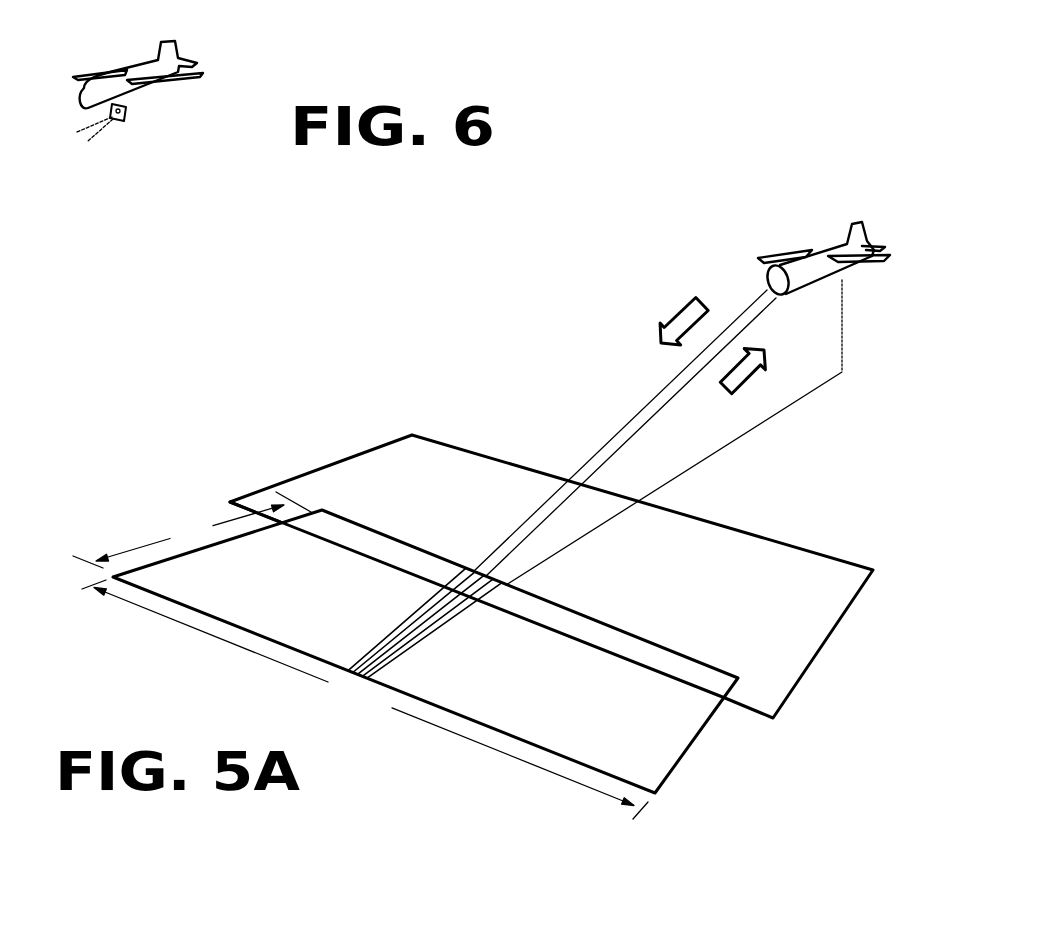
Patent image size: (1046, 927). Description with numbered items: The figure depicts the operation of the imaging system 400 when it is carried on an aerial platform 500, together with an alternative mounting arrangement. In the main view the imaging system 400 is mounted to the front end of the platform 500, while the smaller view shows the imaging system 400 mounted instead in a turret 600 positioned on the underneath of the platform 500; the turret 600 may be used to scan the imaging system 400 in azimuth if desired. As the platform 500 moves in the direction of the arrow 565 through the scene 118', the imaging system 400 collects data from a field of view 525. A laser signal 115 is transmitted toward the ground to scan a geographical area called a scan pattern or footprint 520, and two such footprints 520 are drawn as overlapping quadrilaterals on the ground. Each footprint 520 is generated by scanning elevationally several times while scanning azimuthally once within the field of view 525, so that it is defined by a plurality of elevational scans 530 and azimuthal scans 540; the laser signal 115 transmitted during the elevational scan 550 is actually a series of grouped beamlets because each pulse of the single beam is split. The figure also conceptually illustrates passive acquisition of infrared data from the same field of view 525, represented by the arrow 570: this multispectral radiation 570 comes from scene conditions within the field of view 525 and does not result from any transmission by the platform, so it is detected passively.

In FIG. 6, the aerial platform 500 is at (128, 68).
In FIG. 5A, the aerial platform 500 is at (812, 251).
In FIG. 6, the imaging system 400 is at (121, 139).
In FIG. 5A, the imaging system 400 is at (777, 279).
In FIG. 6, the turret 600 is at (132, 114).
In FIG. 5A, the scene 118' is at (380, 274).
In FIG. 5A, the scan pattern 520 is at (493, 614).
In FIG. 5A, the field of view 525 is at (427, 372).
In FIG. 5A, the elevational scans 530 is at (452, 622).
In FIG. 5A, the laser signal 115 is at (593, 462).
In FIG. 5A, the arrow 565 is at (670, 320).
In FIG. 5A, the arrow 570 is at (768, 363).
In FIG. 5A, the elevational scan 550 is at (192, 530).
In FIG. 5A, the azimuthal scans 540 is at (365, 699).